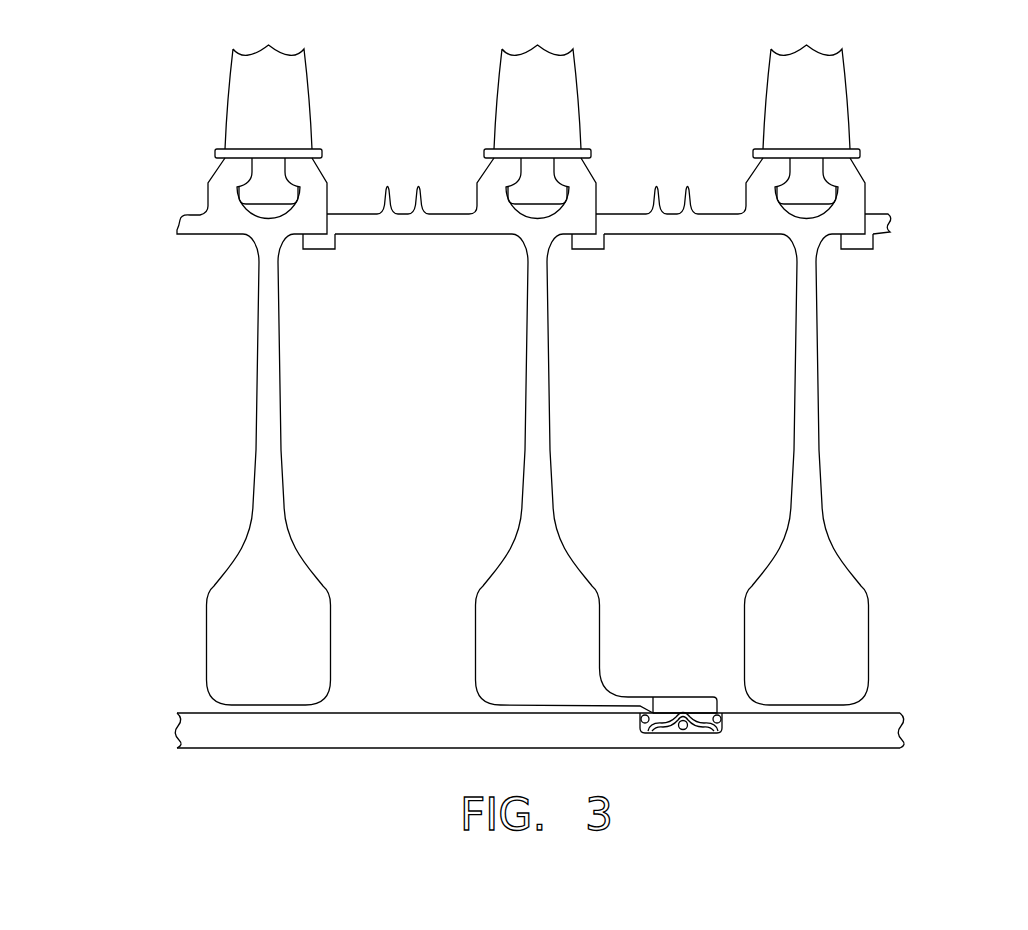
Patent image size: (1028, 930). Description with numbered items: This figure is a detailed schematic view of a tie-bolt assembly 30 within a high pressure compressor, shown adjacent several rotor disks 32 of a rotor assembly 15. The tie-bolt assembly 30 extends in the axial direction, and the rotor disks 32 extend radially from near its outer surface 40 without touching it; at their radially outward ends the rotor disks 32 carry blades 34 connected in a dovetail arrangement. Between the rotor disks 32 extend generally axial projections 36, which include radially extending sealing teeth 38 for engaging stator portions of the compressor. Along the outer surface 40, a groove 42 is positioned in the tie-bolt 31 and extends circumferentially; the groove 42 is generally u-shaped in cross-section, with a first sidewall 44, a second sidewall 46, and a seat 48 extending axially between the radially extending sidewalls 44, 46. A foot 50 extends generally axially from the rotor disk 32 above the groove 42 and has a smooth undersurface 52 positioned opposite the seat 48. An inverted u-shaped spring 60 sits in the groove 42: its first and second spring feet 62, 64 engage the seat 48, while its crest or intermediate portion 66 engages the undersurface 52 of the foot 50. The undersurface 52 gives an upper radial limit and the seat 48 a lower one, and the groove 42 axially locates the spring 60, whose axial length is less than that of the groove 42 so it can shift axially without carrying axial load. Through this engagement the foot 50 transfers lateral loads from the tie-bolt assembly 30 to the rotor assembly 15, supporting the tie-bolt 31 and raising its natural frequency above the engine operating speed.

The rotor assembly 15 is at (598, 376).
The tie-bolt assembly 30 is at (539, 735).
The tie-bolt 31 is at (343, 733).
The rotor disks 32 is at (267, 448).
The blades 34 is at (290, 120).
The projections 36 is at (383, 223).
The sealing teeth 38 is at (391, 168).
The outer surface 40 is at (352, 713).
The groove 42 is at (691, 695).
The first sidewall 44 is at (640, 718).
The second sidewall 46 is at (722, 716).
The seat 48 is at (690, 733).
The foot 50 is at (672, 683).
The undersurface 52 is at (653, 697).
The spring 60 is at (684, 721).
The first spring foot 62 is at (656, 733).
The second spring foot 64 is at (715, 731).
The intermediate portion 66 is at (688, 712).